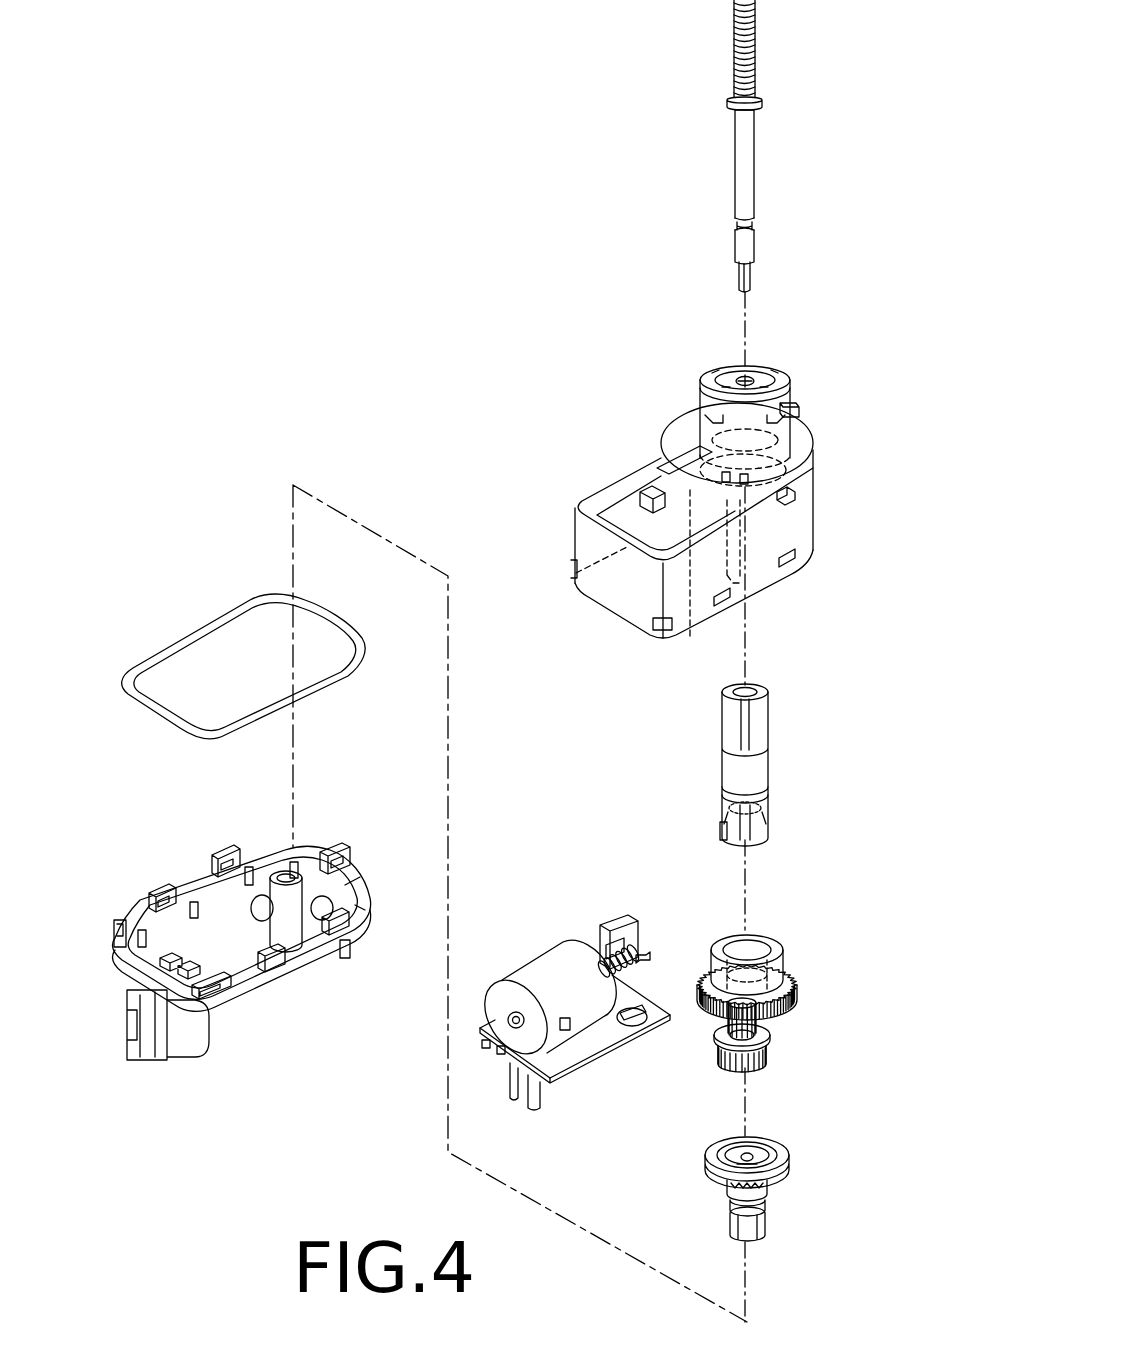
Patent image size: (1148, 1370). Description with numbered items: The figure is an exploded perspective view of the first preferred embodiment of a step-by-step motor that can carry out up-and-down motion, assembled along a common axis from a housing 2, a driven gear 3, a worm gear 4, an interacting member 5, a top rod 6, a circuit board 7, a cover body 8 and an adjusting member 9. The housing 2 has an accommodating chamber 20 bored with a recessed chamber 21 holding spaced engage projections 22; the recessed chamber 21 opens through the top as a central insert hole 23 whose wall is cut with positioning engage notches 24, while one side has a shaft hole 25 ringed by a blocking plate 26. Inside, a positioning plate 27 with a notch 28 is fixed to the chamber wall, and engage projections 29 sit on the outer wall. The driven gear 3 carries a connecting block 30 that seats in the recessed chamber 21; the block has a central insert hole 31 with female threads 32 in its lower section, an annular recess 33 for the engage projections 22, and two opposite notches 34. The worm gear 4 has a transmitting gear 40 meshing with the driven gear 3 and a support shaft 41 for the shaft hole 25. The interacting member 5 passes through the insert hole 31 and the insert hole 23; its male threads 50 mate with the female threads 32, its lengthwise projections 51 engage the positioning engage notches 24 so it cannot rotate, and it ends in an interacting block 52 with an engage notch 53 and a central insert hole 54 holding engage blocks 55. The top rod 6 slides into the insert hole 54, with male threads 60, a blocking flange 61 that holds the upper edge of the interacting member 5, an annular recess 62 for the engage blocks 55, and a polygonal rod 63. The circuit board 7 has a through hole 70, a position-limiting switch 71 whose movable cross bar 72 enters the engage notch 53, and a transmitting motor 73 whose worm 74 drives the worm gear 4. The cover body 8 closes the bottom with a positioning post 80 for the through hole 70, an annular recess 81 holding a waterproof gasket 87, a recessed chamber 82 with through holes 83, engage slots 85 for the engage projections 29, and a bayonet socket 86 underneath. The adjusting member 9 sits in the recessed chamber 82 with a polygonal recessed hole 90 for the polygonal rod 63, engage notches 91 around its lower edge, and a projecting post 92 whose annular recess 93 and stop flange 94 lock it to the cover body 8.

The housing 2 is at (660, 455).
The accommodating chamber 20 is at (630, 600).
The recessed chamber 21 is at (790, 458).
The engage projections 22 is at (800, 413).
The central insert hole 23 is at (763, 390).
The positioning engage notches 24 is at (745, 372).
The shaft hole 25 is at (783, 472).
The blocking plate 26 is at (795, 517).
The positioning plate 27 is at (757, 588).
The notch 28 is at (690, 637).
The engage projections 29 is at (798, 563).
The driven gear 3 is at (788, 954).
The connecting block 30 is at (790, 975).
The central insert hole 31 is at (755, 935).
The female threads 32 is at (788, 1008).
The annular recess 33 is at (795, 960).
The notches 34 is at (768, 945).
The worm gear 4 is at (735, 1056).
The transmitting gear 40 is at (726, 1062).
The support shaft 41 is at (730, 1015).
The interacting member 5 is at (742, 758).
The male threads 50 is at (768, 793).
The lengthwise projections 51 is at (745, 733).
The interacting block 52 is at (730, 826).
The engage notch 53 is at (722, 833).
The insert hole 54 is at (770, 693).
The engage blocks 55 is at (770, 820).
The top rod 6 is at (755, 176).
The male threads 60 is at (757, 50).
The blocking flange 61 is at (766, 101).
The annular recess 62 is at (755, 222).
The polygonal rod 63 is at (751, 276).
The circuit board 7 is at (587, 997).
The through hole 70 is at (632, 1022).
The position-limiting switch 71 is at (612, 925).
The movable cross bar 72 is at (638, 940).
The transmitting motor 73 is at (535, 966).
The worm 74 is at (640, 960).
The cover body 8 is at (273, 951).
The positioning post 80 is at (292, 918).
The annular recess 81 is at (365, 910).
The recessed chamber 82 is at (303, 890).
The through holes 83 is at (360, 892).
The engage slots 85 is at (342, 862).
The bayonet socket 86 is at (190, 1048).
The waterproof gasket 87 is at (207, 618).
The adjusting member 9 is at (760, 1183).
The polygonal recessed hole 90 is at (749, 1158).
The engage notches 91 is at (785, 1192).
The projecting post 92 is at (736, 1200).
The annular recess 93 is at (765, 1207).
The stop flange 94 is at (762, 1228).